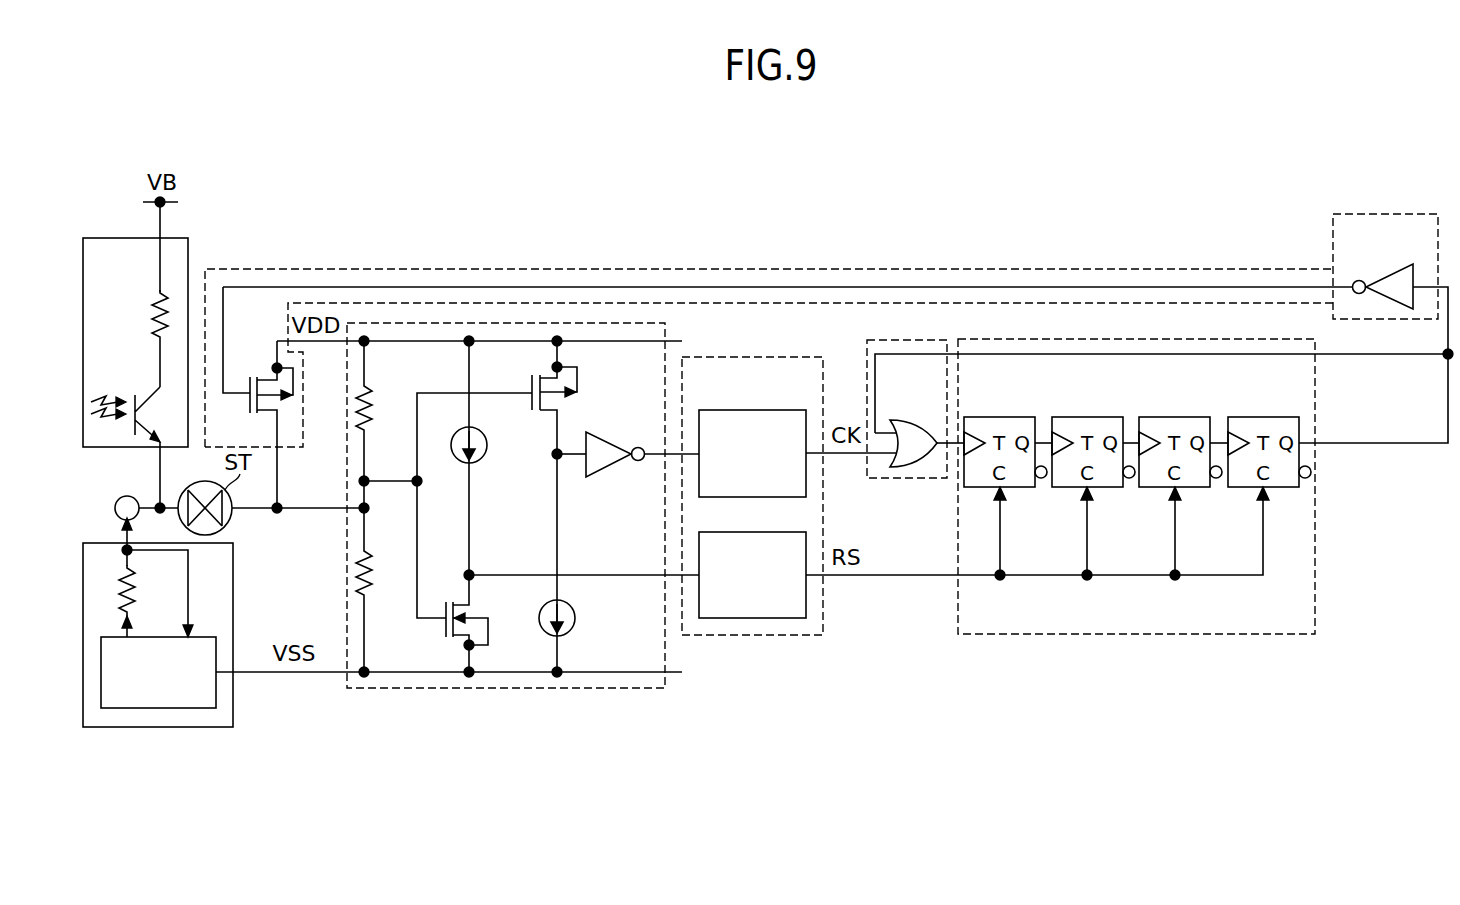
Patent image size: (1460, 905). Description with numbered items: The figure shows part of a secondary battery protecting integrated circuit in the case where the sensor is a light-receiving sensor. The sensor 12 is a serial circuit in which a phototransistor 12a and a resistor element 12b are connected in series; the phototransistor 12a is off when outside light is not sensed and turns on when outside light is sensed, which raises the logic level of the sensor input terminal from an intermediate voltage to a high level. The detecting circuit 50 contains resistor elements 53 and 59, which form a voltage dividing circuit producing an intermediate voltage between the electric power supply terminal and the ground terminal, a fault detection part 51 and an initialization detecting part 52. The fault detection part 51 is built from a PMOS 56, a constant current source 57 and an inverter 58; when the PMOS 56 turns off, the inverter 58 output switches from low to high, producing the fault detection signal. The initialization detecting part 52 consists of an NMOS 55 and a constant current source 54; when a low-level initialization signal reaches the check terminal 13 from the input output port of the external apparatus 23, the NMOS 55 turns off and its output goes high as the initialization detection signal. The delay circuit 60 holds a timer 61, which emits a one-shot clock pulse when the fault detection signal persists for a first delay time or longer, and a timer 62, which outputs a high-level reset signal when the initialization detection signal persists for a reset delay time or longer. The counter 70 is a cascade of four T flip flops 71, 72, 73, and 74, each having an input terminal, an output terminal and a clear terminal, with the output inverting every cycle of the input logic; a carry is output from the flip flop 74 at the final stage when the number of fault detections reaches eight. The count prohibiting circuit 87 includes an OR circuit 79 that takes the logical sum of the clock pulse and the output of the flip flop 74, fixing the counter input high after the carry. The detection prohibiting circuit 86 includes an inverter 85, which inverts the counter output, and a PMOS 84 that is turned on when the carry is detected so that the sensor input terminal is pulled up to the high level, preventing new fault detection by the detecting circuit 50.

The sensor 12 is at (188, 238).
The phototransistor 12a is at (140, 400).
The resistor element 12b is at (156, 295).
The check terminal 13 is at (127, 495).
The external apparatus 23 is at (195, 727).
The detecting circuit 50 is at (598, 690).
The fault detection part 51 is at (594, 400).
The initialization detecting part 52 is at (594, 614).
The resistor element 53 is at (370, 562).
The constant current source 54 is at (486, 438).
The NMOS 55 is at (442, 632).
The PMOS 56 is at (530, 382).
The constant current source 57 is at (572, 628).
The inverter 58 is at (612, 437).
The resistor element 59 is at (370, 395).
The delay circuit 60 is at (755, 355).
The timer 61 is at (750, 410).
The timer 62 is at (750, 532).
The counter 70 is at (1250, 333).
The T flip flop 71 is at (1000, 417).
The T flip flop 72 is at (1088, 417).
The T flip flop 73 is at (1175, 417).
The T flip flop 74 is at (1264, 417).
The OR circuit 79 is at (905, 420).
The PMOS 84 is at (250, 410).
The inverter 85 is at (1388, 270).
The detection prohibiting circuit 86 is at (1370, 212).
The count prohibiting circuit 87 is at (905, 337).